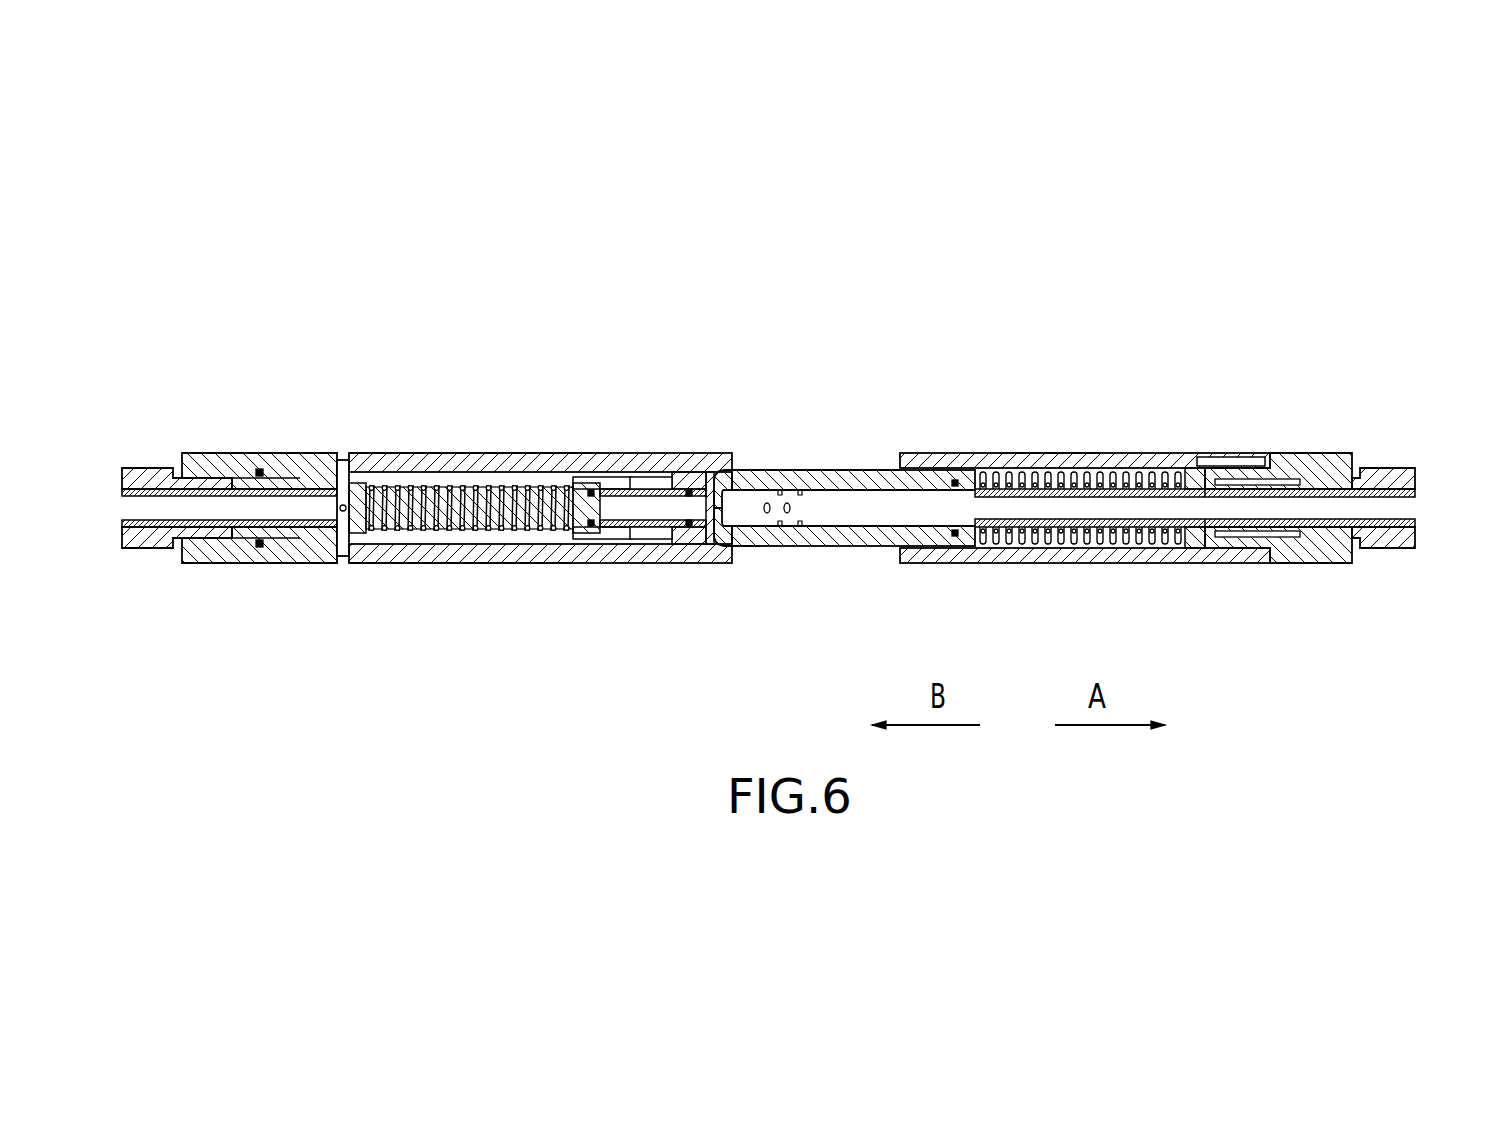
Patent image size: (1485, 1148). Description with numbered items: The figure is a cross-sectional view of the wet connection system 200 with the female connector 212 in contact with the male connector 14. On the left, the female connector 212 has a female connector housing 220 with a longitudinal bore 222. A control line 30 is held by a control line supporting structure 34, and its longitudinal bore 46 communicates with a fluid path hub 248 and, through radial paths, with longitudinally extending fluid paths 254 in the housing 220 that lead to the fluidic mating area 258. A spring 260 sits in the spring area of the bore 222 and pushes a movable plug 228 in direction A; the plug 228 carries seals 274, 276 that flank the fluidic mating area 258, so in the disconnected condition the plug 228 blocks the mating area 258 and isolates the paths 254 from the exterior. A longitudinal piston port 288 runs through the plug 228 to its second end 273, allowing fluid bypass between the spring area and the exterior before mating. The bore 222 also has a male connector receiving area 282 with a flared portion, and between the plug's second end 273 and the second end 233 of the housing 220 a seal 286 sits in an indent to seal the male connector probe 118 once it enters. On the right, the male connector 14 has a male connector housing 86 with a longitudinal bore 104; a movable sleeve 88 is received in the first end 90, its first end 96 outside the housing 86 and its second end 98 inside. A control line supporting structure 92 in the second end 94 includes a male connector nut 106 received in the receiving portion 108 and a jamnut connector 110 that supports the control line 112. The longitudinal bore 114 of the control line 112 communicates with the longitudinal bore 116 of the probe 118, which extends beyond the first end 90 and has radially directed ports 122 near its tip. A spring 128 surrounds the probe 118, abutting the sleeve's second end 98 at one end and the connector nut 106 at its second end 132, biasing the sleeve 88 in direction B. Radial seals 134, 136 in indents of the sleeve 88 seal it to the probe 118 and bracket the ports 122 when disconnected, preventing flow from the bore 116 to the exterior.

The wet connection system 200 is at (380, 283).
The control line 30 is at (165, 540).
The longitudinal bore 46 is at (238, 515).
The control line supporting structure 34 is at (230, 462).
The fluid path hub 248 is at (342, 557).
The female connector 212 is at (555, 457).
The female connector housing 220 is at (460, 462).
The longitudinally extending fluid paths 254 is at (505, 462).
The spring 260 is at (435, 563).
The longitudinal bore 222 is at (525, 563).
The seal 274 is at (592, 563).
The movable plug 228 is at (618, 563).
The fluidic mating area 258 is at (655, 472).
The longitudinal piston port 288 is at (660, 563).
The male connector receiving area 282 is at (699, 489).
The seal 276 is at (692, 563).
The seal 286 is at (716, 478).
The second end of the female connector housing 233 is at (742, 460).
The second end of the movable plug 273 is at (732, 556).
The movable sleeve 88 is at (836, 470).
The radially directed ports 122 is at (789, 500).
The first end of the male connector housing 90 is at (905, 470).
The male connector probe 118 is at (868, 490).
The longitudinal bore 116 is at (882, 546).
The male connector housing 86 is at (1017, 563).
The male connector 14 is at (1065, 452).
The radial seal 136 is at (957, 470).
The second end of the male connector sleeve 98 is at (962, 548).
The longitudinal bore 104 is at (1030, 470).
The spring 128 is at (1105, 548).
The second end of the spring 132 is at (1190, 466).
The male connector nut 106 is at (1307, 563).
The control line supporting structure 92 is at (1343, 563).
The control line 112 is at (1280, 548).
The control line supporting structure receiving portion 108 is at (1207, 457).
The second end of the male connector housing 94 is at (1262, 457).
The jamnut connector 110 is at (1380, 468).
The longitudinal bore 114 is at (1395, 548).
The first end of the male connector sleeve 96 is at (752, 546).
The radial seal 134 is at (758, 546).